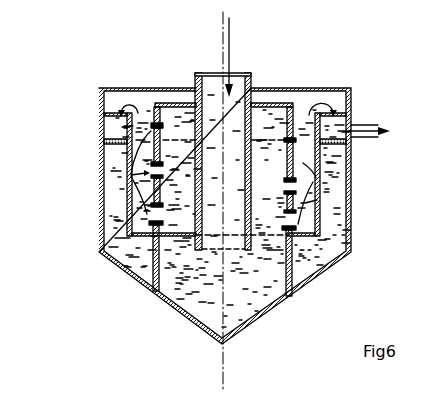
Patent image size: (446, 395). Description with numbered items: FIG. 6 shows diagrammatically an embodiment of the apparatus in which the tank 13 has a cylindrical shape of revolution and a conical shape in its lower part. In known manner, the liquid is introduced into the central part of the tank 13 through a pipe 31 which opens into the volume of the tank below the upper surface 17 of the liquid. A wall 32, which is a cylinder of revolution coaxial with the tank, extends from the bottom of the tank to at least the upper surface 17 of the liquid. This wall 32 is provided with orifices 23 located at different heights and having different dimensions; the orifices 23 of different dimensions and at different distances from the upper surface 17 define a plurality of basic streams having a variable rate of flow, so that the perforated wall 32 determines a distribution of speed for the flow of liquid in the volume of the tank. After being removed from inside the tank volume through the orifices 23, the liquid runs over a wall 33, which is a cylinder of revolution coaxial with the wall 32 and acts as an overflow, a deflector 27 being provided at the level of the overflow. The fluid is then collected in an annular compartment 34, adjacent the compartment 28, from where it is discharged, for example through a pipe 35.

The tank 13 is at (197, 323).
The upper surface of the liquid 17 is at (173, 110).
The orifices 23 is at (131, 175).
The deflector 27 is at (317, 114).
The compartment 28 is at (333, 102).
The pipe 31 is at (251, 80).
The wall 32 is at (153, 277).
The wall 33 is at (127, 132).
The annular compartment 34 is at (118, 124).
The pipe 35 is at (378, 125).